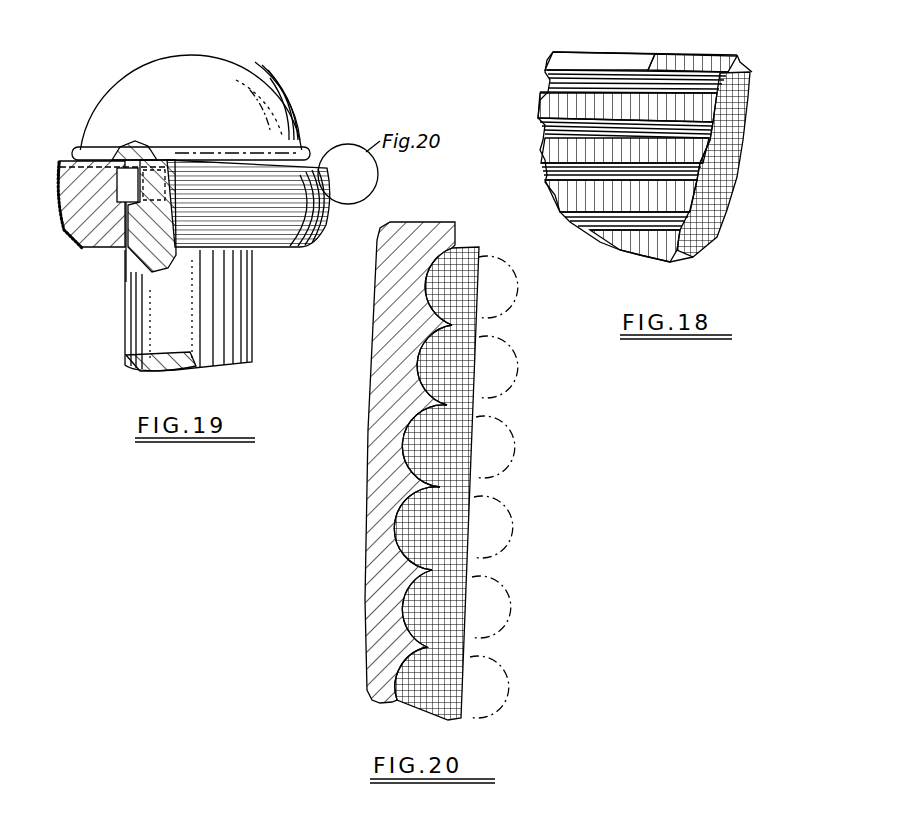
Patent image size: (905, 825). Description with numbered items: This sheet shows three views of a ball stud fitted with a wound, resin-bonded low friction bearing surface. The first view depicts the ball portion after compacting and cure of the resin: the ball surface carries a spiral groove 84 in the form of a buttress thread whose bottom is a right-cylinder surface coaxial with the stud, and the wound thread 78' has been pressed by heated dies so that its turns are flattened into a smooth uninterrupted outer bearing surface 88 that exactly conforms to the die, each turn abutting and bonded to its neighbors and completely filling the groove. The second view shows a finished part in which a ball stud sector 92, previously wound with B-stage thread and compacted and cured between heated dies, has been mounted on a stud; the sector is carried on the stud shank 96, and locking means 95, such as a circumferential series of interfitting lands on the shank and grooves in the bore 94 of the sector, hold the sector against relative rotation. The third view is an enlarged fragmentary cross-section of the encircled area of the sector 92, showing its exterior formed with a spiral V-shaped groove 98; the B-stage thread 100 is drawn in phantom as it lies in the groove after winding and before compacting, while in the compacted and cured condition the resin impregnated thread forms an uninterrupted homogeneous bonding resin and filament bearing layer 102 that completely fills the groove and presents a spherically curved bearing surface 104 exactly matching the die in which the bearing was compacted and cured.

In FIG. 18, the thread 78' is at (746, 151).
In FIG. 18, the spiral groove 84 is at (567, 203).
In FIG. 18, the outer bearing surface 88 is at (720, 206).
In FIG. 19, the ball stud sector 92 is at (100, 242).
In FIG. 20, the ball stud sector 92 is at (378, 577).
In FIG. 19, the bore 94 is at (141, 278).
In FIG. 19, the locking means 95 is at (130, 180).
In FIG. 19, the stud shank 96 is at (240, 337).
In FIG. 20, the spiral V-shaped groove 98 is at (487, 298).
In FIG. 20, the B-stage thread 100 is at (485, 366).
In FIG. 20, the bearing layer 102 is at (470, 463).
In FIG. 20, the spherically curved bearing surface 104 is at (465, 600).